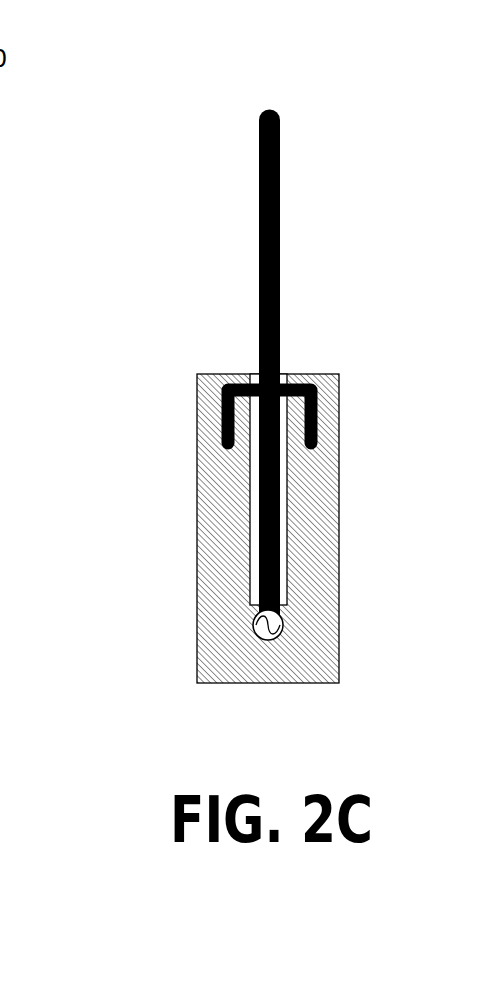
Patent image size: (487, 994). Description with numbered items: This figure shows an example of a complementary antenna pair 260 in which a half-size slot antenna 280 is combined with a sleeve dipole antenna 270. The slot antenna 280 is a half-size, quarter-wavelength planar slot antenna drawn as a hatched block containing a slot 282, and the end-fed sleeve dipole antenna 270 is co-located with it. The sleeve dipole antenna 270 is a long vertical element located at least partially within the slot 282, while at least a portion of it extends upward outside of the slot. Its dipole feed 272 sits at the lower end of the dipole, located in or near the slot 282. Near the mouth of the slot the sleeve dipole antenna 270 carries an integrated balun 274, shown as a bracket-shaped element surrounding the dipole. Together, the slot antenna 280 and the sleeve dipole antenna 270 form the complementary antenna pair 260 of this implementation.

The sensor assembly 260 is at (277, 364).
The sleeve dipole antenna 270 is at (260, 168).
The integrated balun 274 is at (315, 428).
The dipole feed 272 is at (283, 612).
The half-size slot antenna 280 is at (250, 671).
The slot 282 is at (256, 490).